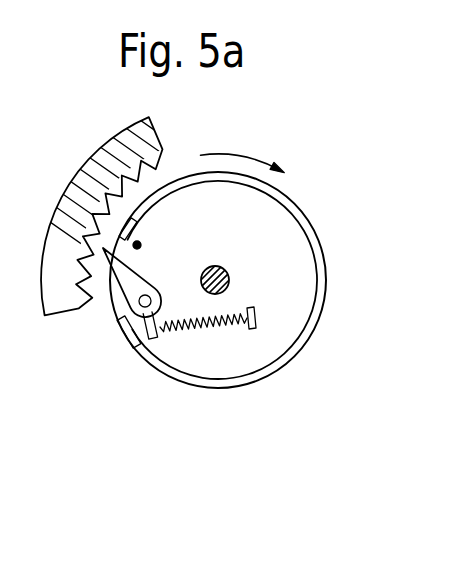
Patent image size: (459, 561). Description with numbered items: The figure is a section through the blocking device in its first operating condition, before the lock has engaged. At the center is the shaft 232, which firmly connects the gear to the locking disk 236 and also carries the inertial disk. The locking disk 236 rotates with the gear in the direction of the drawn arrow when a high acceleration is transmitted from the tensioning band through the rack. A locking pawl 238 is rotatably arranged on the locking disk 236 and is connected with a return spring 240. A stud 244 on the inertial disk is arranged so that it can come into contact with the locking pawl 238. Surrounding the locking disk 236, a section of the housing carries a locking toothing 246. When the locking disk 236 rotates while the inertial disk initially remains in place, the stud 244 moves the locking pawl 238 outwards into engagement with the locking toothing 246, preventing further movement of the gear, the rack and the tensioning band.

The shaft 232 is at (226, 268).
The locking disk 236 is at (290, 293).
The locking pawl 238 is at (131, 282).
The return spring 240 is at (206, 325).
The stud 244 is at (143, 243).
The locking toothing 246 is at (97, 156).